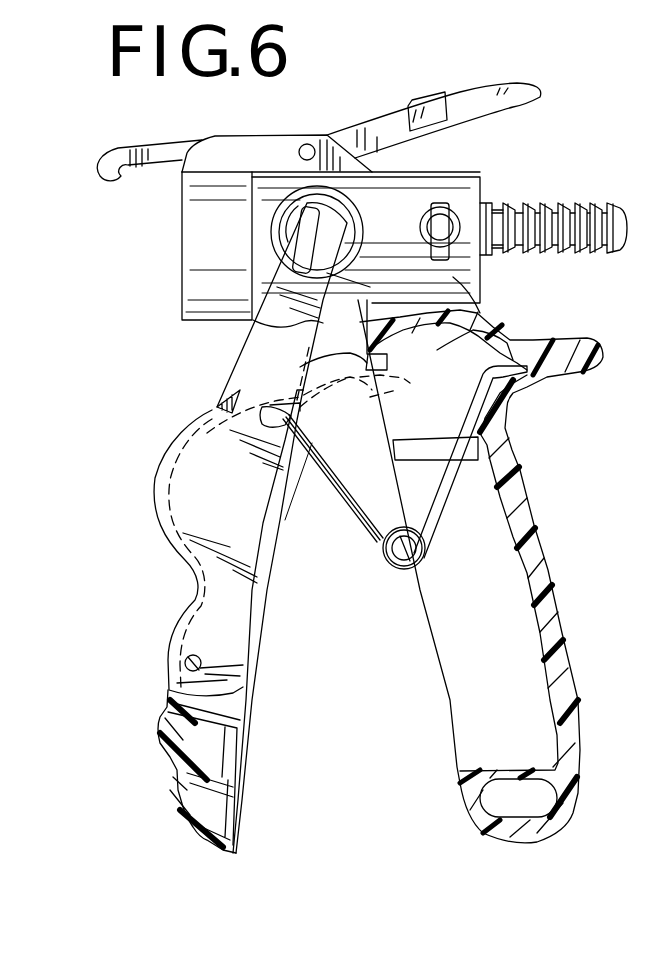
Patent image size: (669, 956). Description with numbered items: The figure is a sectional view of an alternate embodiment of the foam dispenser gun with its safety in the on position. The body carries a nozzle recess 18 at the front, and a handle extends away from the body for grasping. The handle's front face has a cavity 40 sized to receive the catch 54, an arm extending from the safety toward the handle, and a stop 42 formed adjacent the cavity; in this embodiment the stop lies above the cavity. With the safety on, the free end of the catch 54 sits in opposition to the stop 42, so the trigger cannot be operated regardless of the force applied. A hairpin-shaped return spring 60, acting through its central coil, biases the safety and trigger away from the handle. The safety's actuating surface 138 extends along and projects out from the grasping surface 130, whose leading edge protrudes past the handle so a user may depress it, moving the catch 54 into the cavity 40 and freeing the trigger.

The nozzle recess 18 is at (183, 249).
The cavity 40 is at (477, 331).
The stop 42 is at (387, 365).
The catch 54 is at (338, 361).
The return spring 60 is at (392, 550).
The grasping surface 130 is at (163, 733).
The contoured outer surface 138 is at (158, 452).